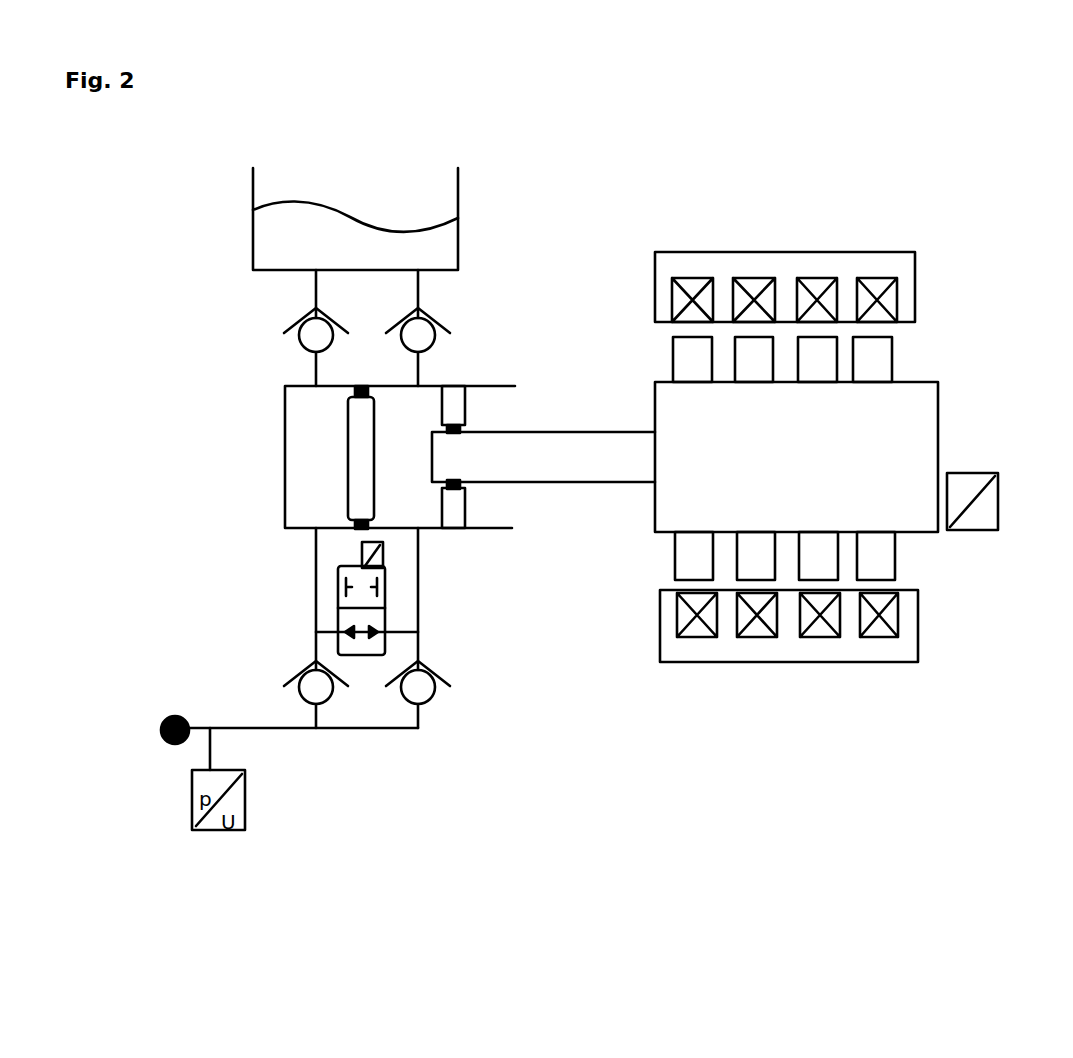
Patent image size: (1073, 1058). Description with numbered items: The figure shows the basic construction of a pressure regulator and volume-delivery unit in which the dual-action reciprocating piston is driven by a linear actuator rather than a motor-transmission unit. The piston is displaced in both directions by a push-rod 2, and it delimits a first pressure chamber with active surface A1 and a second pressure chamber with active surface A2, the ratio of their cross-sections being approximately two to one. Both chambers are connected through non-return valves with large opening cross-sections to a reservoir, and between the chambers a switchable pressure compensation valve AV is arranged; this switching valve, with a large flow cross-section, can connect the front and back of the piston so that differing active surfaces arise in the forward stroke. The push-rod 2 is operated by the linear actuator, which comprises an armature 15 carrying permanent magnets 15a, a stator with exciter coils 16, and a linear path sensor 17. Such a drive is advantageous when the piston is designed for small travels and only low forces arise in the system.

The push-rod 2 is at (552, 455).
The armature 15 is at (898, 425).
The permanent magnets 15a is at (882, 367).
The stator with exciter coils 16 is at (895, 263).
The linear path sensor 17 is at (977, 530).
The active surface of first pressure chamber A1 is at (347, 458).
The active surface of second pressure chamber A2 is at (371, 493).
The switchable pressure compensation valve AV is at (383, 608).